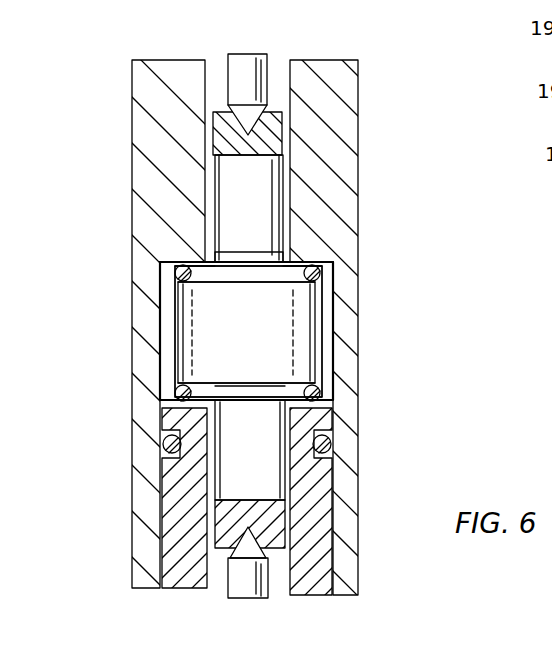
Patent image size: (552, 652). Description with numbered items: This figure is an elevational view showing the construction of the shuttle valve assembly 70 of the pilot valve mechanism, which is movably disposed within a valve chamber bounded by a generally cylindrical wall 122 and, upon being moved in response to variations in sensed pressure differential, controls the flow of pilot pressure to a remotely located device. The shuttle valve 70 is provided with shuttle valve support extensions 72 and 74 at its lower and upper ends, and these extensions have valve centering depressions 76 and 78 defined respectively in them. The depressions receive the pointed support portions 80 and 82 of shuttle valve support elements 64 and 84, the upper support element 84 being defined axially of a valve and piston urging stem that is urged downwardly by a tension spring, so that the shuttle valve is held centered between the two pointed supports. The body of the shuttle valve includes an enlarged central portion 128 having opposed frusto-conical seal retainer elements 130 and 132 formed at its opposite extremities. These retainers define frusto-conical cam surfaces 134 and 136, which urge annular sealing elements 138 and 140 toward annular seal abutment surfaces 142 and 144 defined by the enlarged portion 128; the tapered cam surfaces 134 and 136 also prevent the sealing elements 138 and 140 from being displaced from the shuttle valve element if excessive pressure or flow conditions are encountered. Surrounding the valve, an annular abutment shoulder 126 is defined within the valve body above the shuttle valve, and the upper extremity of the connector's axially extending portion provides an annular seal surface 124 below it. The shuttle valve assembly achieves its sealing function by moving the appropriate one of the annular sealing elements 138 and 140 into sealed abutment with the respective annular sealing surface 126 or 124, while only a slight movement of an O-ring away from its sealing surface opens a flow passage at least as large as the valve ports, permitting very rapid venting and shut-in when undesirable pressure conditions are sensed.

The shuttle valve support element 64 is at (262, 585).
The shuttle valve assembly 70 is at (172, 366).
The shuttle valve support extension 72 is at (228, 486).
The shuttle valve support extension 74 is at (235, 178).
The valve centering depression 76 is at (272, 551).
The valve centering depression 78 is at (232, 115).
The pointed support portion 80 is at (243, 540).
The pointed support portion 82 is at (258, 128).
The shuttle valve support element 84 is at (256, 72).
The cylindrical wall 122 is at (163, 317).
The annular seal surface 124 is at (166, 412).
The annular abutment shoulder 126 is at (162, 262).
The enlarged central portion 128 is at (188, 340).
The frusto-conical seal retainer element 130 is at (272, 256).
The frusto-conical seal retainer element 132 is at (300, 410).
The frusto-conical cam surface 134 is at (237, 273).
The frusto-conical cam surface 136 is at (277, 388).
The annular sealing element 138 is at (176, 274).
The annular sealing element 140 is at (176, 394).
The annular seal abutment surface 142 is at (305, 269).
The annular seal abutment surface 144 is at (247, 392).